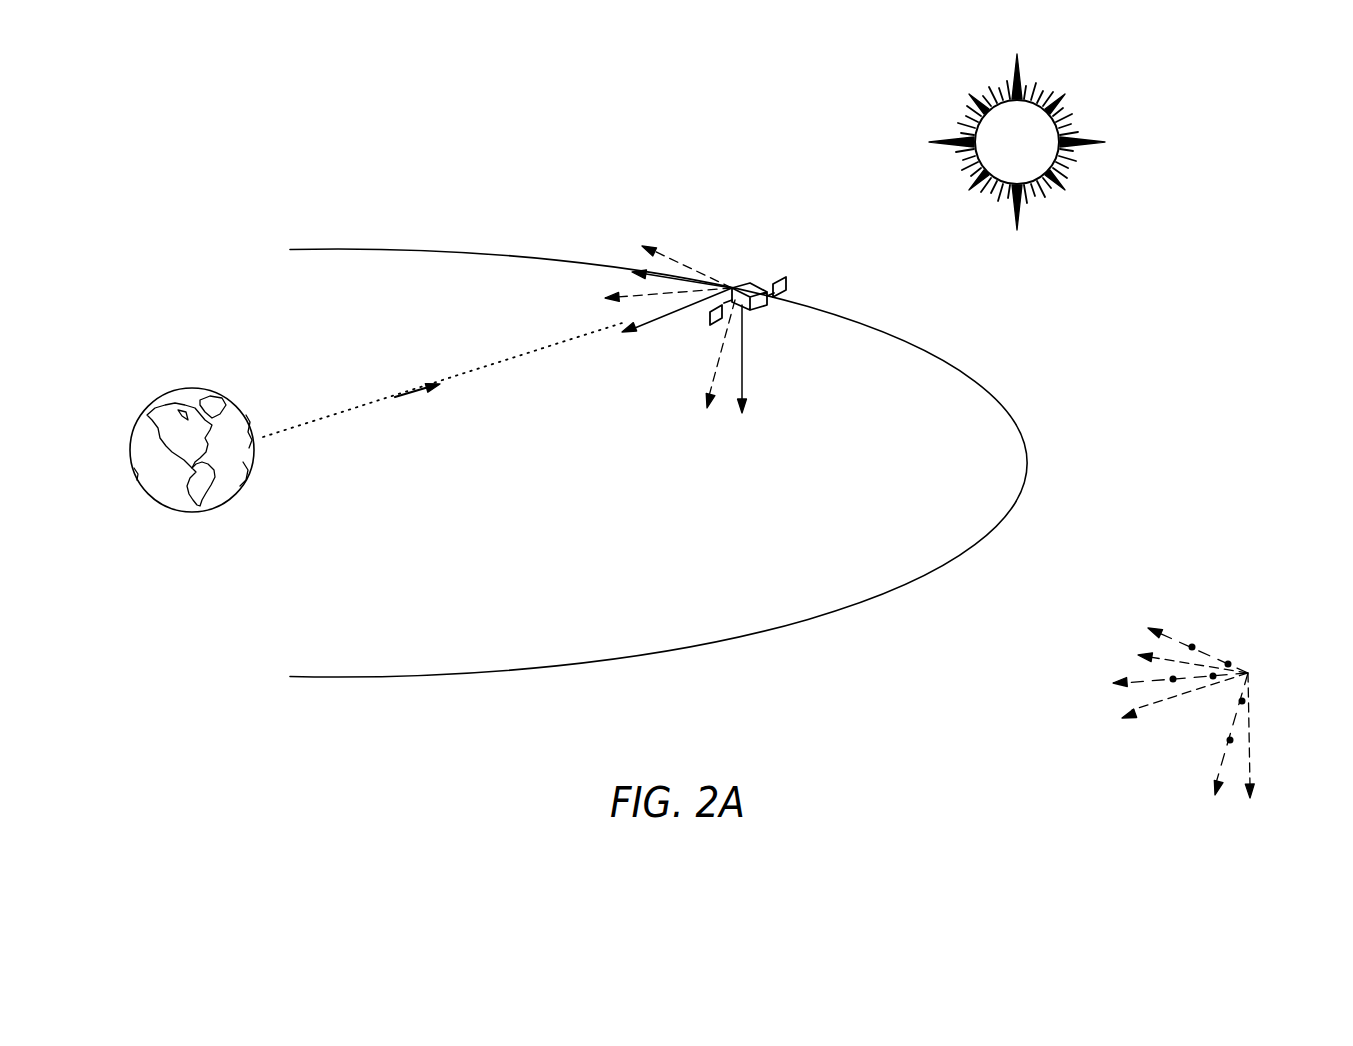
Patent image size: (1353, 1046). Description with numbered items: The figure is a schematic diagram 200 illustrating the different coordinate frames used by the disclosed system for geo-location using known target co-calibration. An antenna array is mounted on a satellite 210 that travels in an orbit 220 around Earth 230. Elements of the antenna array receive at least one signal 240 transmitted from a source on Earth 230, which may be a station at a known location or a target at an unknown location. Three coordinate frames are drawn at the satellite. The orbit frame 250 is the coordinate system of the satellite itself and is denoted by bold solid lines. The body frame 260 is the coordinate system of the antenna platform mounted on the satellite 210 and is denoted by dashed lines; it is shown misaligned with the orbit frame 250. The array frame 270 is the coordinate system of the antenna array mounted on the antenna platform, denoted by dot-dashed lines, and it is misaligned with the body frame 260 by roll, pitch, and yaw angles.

The schematic diagram 200 is at (423, 158).
The satellite 210 is at (753, 283).
The orbit 220 is at (1022, 428).
The Earth 230 is at (162, 395).
The signal 240 is at (375, 403).
The orbit frame 250 is at (742, 370).
The body frame 260 is at (682, 258).
The array frame 270 is at (1248, 673).